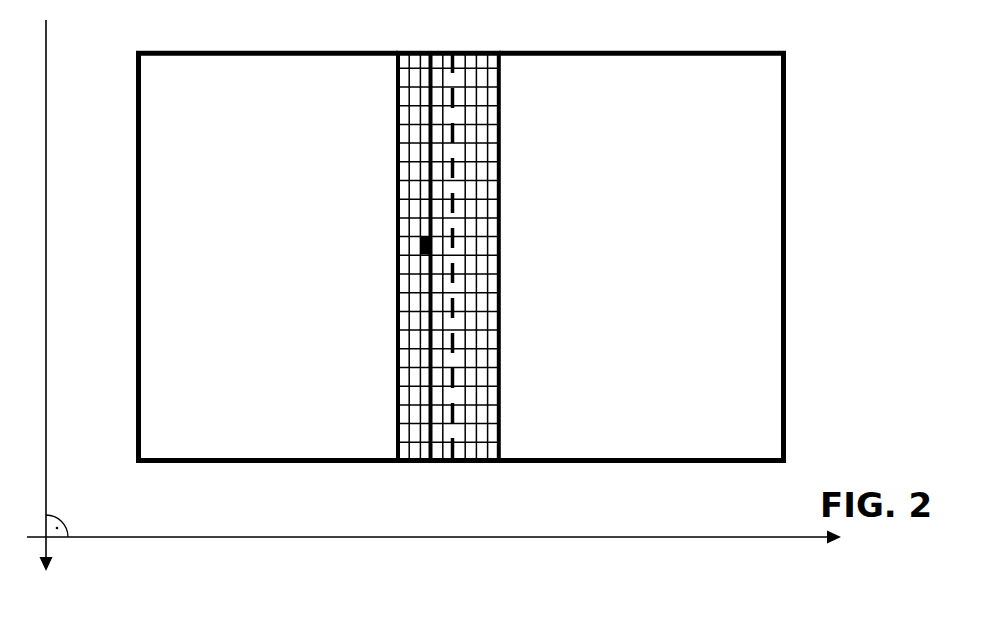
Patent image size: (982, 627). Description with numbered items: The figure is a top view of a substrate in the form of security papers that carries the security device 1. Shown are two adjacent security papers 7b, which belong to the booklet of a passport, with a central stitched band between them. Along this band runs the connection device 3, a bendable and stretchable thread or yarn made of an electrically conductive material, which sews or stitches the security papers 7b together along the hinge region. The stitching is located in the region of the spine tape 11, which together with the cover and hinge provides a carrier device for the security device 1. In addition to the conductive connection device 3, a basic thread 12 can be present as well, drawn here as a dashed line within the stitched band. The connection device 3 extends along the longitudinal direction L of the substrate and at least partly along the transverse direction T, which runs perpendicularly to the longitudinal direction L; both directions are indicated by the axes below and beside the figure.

The security device 1 is at (461, 265).
The connection device 3 is at (433, 265).
The security paper 7b is at (238, 457).
The spine tape 11 is at (398, 94).
The basic thread 12 is at (456, 62).
The longitudinal direction L is at (46, 410).
The transverse direction T is at (677, 537).